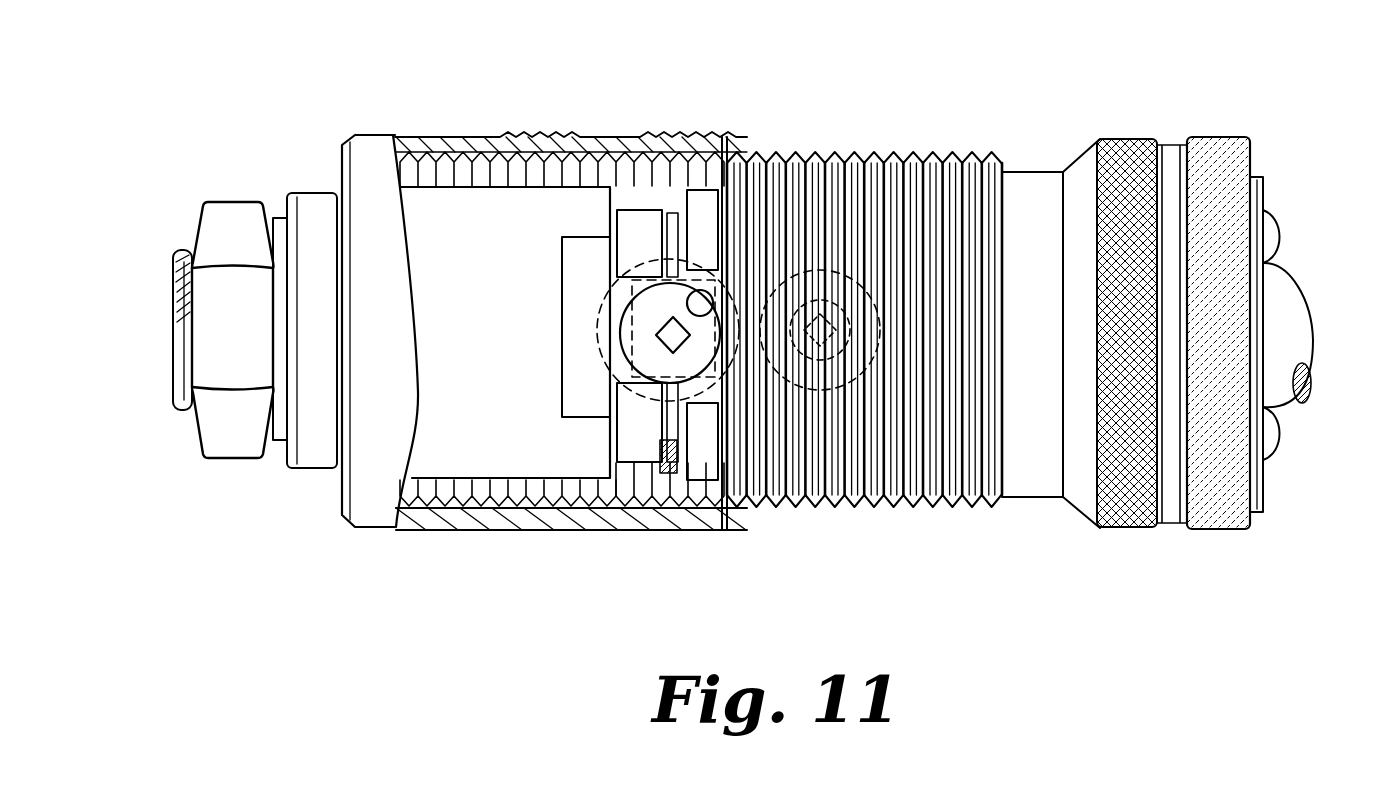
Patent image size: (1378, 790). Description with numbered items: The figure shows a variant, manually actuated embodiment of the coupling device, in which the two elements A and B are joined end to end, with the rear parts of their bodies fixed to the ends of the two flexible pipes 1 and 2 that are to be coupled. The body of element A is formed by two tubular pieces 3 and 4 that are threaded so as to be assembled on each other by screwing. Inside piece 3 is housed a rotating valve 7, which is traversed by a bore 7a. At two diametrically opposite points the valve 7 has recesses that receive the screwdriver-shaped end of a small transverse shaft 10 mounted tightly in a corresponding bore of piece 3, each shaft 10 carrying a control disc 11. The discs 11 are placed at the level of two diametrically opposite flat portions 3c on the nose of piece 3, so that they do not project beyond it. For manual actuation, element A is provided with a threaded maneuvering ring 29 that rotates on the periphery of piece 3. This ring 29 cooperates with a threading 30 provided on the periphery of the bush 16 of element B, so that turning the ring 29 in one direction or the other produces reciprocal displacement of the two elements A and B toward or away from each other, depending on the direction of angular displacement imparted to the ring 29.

The flexible pipe 1 is at (176, 397).
The flexible pipe 2 is at (1298, 266).
The tubular piece 3 is at (435, 205).
The flat portion 3c is at (568, 404).
The tubular piece 4 is at (308, 458).
The rotating valve 7 is at (600, 312).
The bore 7a is at (628, 262).
The transverse shaft 10 is at (660, 335).
The control disc 11 is at (622, 328).
The bush 16 is at (1032, 480).
The threaded maneuvering ring 29 is at (538, 528).
The threading 30 is at (841, 148).
The element A is at (266, 170).
The element B is at (1118, 126).